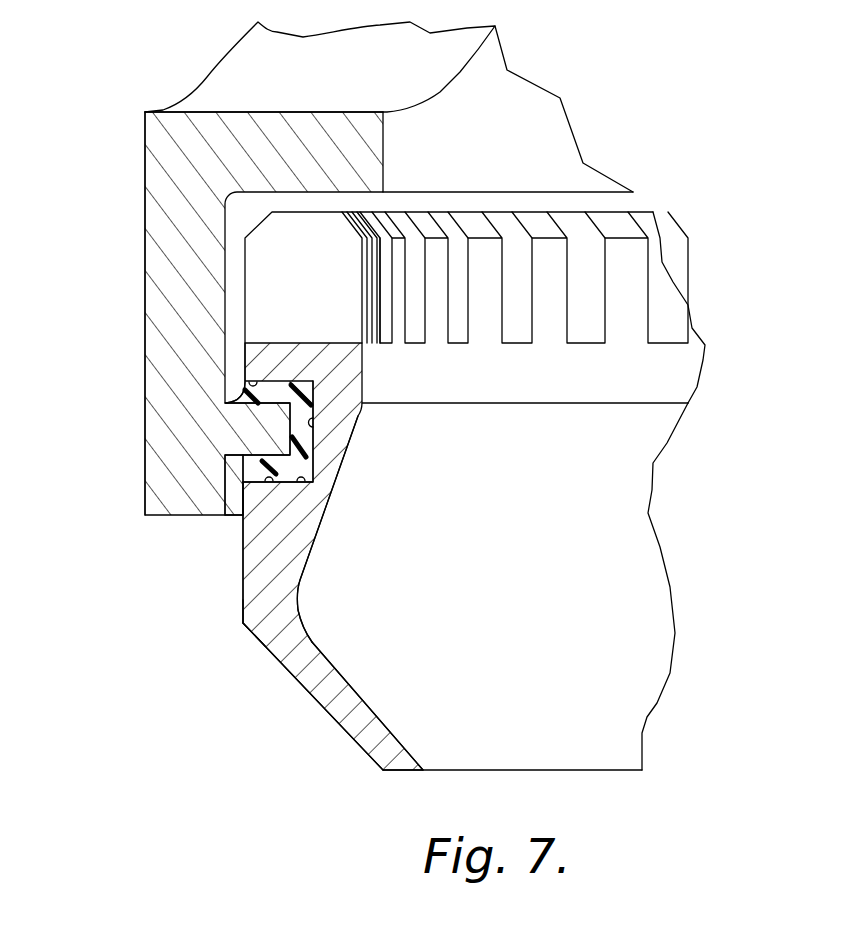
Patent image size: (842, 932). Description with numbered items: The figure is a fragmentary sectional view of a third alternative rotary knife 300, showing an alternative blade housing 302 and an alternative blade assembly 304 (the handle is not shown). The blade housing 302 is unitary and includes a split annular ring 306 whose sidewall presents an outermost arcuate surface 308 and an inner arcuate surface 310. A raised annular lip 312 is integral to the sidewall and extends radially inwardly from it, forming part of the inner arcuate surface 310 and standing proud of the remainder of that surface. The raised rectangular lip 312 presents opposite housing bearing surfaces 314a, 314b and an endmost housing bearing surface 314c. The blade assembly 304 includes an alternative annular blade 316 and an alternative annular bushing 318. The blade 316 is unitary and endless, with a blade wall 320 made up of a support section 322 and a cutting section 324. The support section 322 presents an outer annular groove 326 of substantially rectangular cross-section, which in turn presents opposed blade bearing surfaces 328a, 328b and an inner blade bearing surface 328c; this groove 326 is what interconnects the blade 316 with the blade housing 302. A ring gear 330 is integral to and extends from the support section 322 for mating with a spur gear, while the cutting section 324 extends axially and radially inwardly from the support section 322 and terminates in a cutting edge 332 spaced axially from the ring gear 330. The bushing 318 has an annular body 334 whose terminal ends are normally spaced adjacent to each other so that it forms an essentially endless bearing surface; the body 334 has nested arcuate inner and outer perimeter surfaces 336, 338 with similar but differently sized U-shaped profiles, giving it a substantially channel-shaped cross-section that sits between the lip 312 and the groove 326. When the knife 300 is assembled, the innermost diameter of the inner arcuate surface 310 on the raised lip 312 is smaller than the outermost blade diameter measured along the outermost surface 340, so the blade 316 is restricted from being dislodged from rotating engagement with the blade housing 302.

The rotary knife 300 is at (588, 79).
The blade housing 302 is at (200, 338).
The blade assembly 304 is at (509, 463).
The split annular ring 306 is at (165, 127).
The outermost arcuate surface 308 is at (150, 290).
The inner arcuate surface 310 is at (237, 497).
The raised annular lip 312 is at (220, 468).
The housing bearing surface 314a is at (233, 390).
The housing bearing surface 314b is at (237, 458).
The endmost housing bearing surface 314c is at (300, 444).
The annular blade 316 is at (690, 378).
The annular bushing 318 is at (262, 514).
The blade wall 320 is at (657, 585).
The support section 322 is at (305, 515).
The cutting section 324 is at (372, 717).
The outer annular groove 326 is at (310, 478).
The blade bearing surface 328a is at (263, 383).
The blade bearing surface 328b is at (275, 478).
The inner blade bearing surface 328c is at (316, 430).
The ring gear 330 is at (628, 295).
The cutting edge 332 is at (528, 770).
The annular body 334 is at (316, 406).
The inner perimeter surface 336 is at (322, 397).
The outer perimeter surface 338 is at (260, 407).
The outermost surface 340 is at (242, 607).